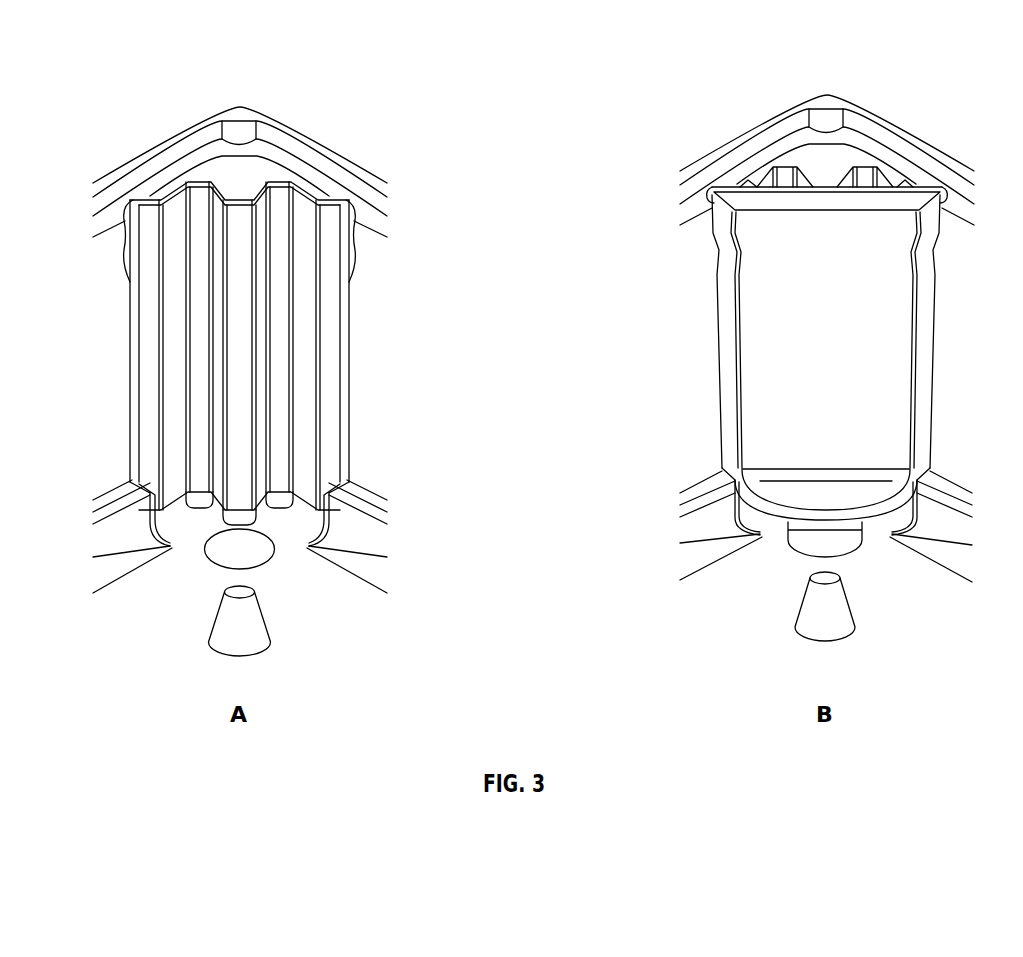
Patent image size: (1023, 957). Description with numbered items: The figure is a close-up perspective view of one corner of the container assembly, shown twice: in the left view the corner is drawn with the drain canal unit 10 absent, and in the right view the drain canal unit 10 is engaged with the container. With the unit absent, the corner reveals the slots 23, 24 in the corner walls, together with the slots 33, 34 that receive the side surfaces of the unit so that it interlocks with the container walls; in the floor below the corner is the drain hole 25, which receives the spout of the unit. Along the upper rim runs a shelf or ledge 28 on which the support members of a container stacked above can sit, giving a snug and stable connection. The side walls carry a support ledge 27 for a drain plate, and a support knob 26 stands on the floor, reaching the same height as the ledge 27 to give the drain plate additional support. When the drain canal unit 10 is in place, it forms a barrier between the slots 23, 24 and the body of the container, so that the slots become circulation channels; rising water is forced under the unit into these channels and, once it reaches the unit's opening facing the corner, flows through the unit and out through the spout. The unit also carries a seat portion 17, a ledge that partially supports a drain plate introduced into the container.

The drain canal unit 10 is at (902, 250).
The seat portion 17 is at (857, 497).
The slot 23 is at (202, 193).
The slot 24 is at (280, 195).
The drain hole 25 is at (247, 550).
The support knob 26 is at (837, 613).
The support ledge 27 is at (695, 500).
The ledge 28 is at (705, 195).
The slot 33 is at (350, 212).
The slot 34 is at (138, 207).